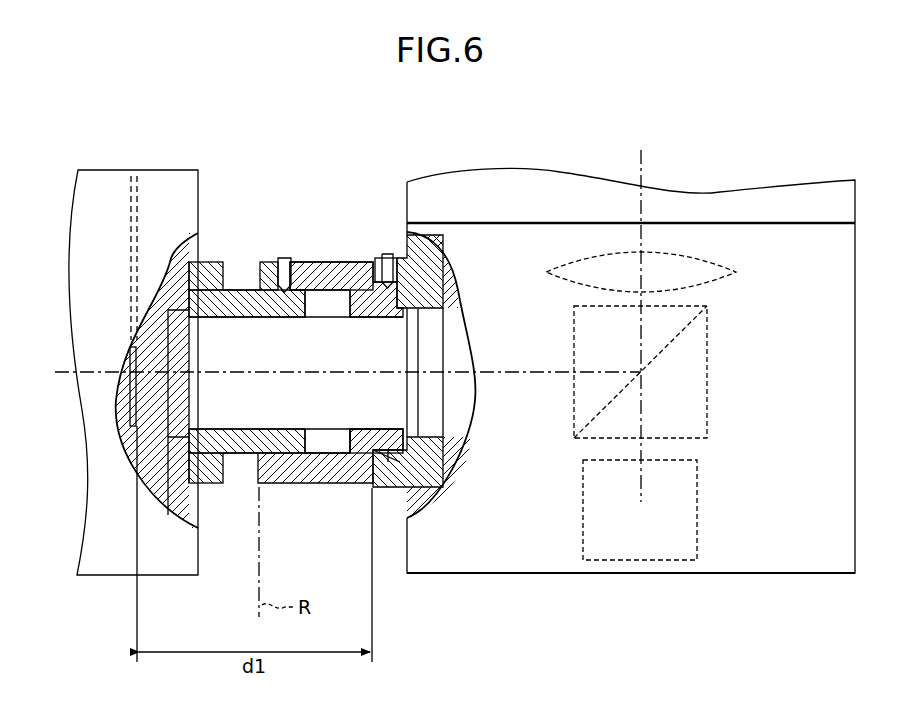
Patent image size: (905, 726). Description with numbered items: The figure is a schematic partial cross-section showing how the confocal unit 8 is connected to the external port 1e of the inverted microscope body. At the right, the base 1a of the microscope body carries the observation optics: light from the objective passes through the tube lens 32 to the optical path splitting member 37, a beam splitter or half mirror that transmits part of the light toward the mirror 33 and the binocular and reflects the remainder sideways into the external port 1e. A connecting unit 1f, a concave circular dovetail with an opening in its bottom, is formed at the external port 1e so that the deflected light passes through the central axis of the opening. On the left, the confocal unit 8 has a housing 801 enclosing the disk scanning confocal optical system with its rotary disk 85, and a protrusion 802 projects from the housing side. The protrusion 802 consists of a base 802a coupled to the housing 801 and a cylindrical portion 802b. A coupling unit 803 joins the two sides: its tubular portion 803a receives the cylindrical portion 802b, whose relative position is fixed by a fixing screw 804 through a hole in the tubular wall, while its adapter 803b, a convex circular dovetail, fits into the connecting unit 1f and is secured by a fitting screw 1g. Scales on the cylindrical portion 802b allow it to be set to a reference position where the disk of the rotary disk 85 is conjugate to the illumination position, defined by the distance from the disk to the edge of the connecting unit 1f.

The confocal unit 8 is at (170, 158).
The housing 801 is at (104, 182).
The rotary disk 85 is at (126, 401).
The protrusion 802 is at (247, 375).
The base 802a is at (208, 260).
The cylindrical portion 802b is at (240, 486).
The fixing screw 804 is at (283, 257).
The coupling unit 803 is at (330, 389).
The tubular portion 803a is at (305, 261).
The adapter 803b is at (378, 491).
The fitting screw 1g is at (384, 257).
The external port 1e is at (400, 257).
The connecting unit 1f is at (393, 491).
The base 1a is at (826, 574).
The tube lens 32 is at (736, 272).
The optical path splitting member 37 is at (707, 372).
The mirror 33 is at (697, 520).